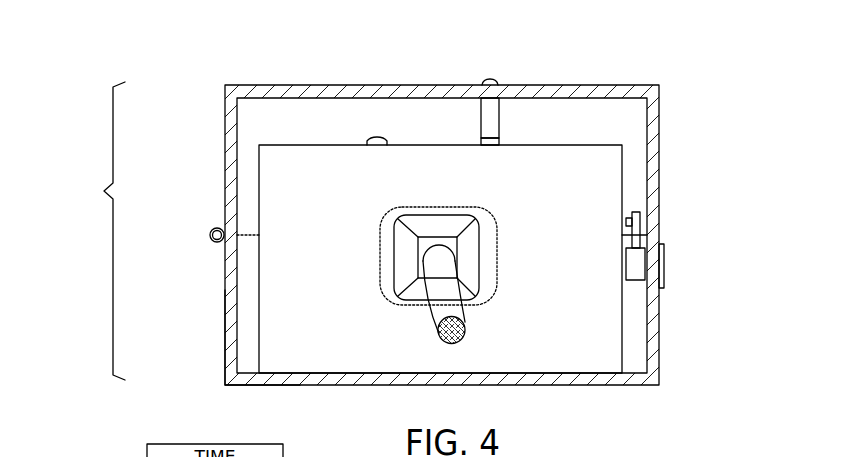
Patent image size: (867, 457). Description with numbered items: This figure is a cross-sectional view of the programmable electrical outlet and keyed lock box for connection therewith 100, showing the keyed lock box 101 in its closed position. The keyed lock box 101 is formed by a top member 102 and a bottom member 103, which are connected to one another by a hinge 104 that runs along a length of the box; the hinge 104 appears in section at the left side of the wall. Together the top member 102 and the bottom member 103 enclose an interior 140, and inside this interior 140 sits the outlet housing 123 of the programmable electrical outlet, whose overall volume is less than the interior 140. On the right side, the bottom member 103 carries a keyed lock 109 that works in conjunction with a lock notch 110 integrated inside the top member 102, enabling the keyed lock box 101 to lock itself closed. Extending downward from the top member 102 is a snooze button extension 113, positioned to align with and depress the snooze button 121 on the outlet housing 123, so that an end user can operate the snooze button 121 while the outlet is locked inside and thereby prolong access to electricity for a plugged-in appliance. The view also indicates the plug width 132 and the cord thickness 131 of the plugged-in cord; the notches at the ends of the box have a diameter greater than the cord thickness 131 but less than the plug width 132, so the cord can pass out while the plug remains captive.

The programmable electrical outlet and keyed lock box for connection therewith 100 is at (157, 80).
The keyed lock box 101 is at (91, 231).
The top member 102 is at (227, 162).
The bottom member 103 is at (226, 310).
The hinge 104 is at (210, 235).
The keyed lock 109 is at (665, 258).
The lock notch 110 is at (628, 212).
The snooze button extension 113 is at (490, 79).
The snooze button 121 is at (500, 138).
The outlet housing 123 is at (311, 150).
The cord thickness 131 is at (363, 360).
The plug width 132 is at (338, 258).
The interior 140 is at (625, 113).